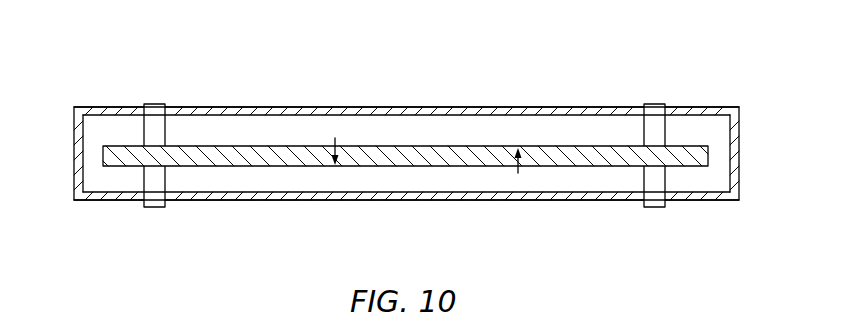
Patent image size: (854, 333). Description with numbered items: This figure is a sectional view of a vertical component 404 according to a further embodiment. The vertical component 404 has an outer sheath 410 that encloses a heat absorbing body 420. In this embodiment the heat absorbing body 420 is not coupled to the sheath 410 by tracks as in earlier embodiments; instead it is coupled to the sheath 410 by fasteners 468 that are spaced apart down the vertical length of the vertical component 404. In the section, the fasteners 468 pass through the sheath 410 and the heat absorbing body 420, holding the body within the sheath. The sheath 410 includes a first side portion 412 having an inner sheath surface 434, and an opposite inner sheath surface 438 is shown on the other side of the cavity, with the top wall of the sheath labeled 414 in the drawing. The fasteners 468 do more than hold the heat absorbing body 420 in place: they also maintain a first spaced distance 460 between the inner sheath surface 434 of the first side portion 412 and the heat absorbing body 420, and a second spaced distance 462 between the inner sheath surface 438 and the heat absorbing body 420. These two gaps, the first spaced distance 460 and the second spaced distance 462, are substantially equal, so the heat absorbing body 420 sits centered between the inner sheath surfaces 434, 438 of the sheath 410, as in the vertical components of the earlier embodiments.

The vertical component 404 is at (125, 93).
The sheath 410 is at (741, 131).
The first side portion 412 is at (594, 202).
The top wall 414 is at (295, 107).
The heat absorbing body 420 is at (274, 166).
The inner sheath surface 434 is at (545, 192).
The inner sheath surface 438 is at (466, 116).
The first spaced distance 460 is at (334, 196).
The second spaced distance 462 is at (519, 107).
The fasteners 468 is at (157, 128).